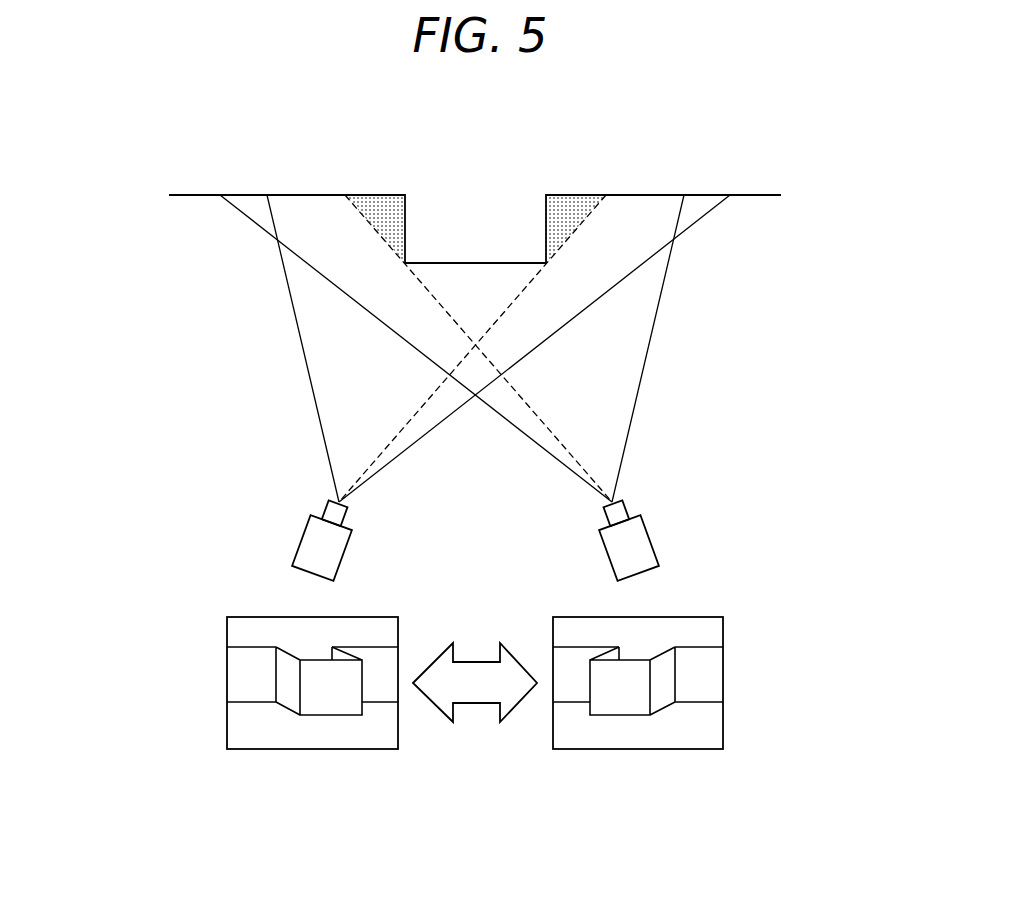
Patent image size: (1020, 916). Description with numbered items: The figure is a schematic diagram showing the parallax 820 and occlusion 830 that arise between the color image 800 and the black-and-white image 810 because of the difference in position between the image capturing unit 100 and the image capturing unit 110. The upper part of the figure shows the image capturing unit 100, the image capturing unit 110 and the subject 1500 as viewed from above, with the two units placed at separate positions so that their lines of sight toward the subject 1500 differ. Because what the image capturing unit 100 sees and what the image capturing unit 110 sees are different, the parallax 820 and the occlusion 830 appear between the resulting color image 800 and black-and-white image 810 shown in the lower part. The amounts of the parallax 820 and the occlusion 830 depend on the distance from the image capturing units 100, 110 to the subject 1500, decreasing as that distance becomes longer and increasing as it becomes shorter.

The occlusion 830 is at (378, 212).
The subject 1500 is at (474, 265).
The image capturing unit 110 is at (316, 541).
The image capturing unit 100 is at (635, 541).
The black-and-white image 810 is at (254, 750).
The color image 800 is at (697, 750).
The parallax 820 is at (476, 705).